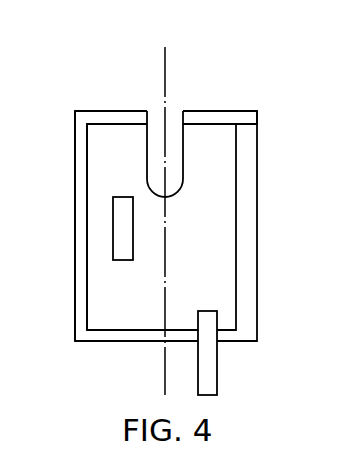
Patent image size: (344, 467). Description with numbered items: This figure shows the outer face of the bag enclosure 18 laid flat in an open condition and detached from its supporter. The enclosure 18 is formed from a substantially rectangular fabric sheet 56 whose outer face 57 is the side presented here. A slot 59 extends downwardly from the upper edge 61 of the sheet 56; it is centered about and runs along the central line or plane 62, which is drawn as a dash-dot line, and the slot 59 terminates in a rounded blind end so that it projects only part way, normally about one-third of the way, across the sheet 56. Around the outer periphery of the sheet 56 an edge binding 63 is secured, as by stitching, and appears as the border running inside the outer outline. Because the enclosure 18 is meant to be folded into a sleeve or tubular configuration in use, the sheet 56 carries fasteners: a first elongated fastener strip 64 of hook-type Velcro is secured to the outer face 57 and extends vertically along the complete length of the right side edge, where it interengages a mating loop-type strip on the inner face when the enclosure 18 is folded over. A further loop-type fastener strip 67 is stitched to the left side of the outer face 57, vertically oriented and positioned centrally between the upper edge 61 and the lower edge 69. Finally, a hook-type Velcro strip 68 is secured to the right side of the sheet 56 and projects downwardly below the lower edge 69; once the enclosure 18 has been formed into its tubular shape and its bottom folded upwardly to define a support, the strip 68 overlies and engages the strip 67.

The bag enclosure 18 is at (173, 232).
The fabric sheet 56 is at (227, 192).
The outer face 57 is at (201, 263).
The slot 59 is at (149, 139).
The upper edge 61 is at (215, 118).
The central line or plane 62 is at (165, 75).
The edge binding 63 is at (82, 280).
The first elongated fastener strip 64 is at (248, 236).
The fastener strip 67 is at (120, 228).
The hook-type Velcro strip 68 is at (208, 367).
The lower edge 69 is at (117, 343).